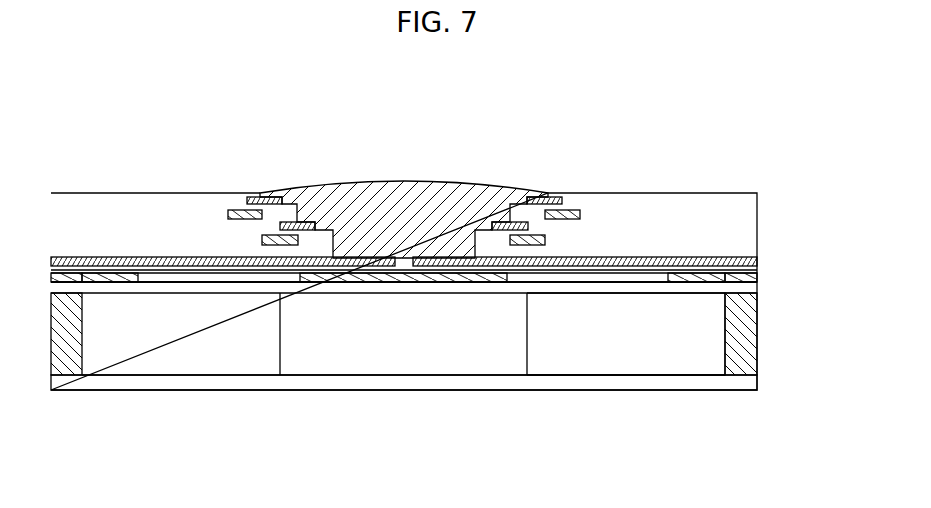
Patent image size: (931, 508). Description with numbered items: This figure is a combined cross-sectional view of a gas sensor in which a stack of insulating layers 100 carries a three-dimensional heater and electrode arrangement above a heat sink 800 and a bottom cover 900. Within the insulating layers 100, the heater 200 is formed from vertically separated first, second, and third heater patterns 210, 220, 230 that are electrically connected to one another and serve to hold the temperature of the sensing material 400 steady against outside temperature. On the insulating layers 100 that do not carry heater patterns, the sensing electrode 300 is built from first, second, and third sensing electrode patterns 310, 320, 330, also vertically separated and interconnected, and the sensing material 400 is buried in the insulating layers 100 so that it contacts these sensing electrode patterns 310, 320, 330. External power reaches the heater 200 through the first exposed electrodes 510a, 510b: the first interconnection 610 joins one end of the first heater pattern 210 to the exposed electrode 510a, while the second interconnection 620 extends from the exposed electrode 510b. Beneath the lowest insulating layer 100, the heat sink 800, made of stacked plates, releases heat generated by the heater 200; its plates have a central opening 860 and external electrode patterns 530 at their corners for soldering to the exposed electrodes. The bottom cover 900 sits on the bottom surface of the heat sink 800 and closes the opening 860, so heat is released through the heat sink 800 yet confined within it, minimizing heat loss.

The insulating layer 100 is at (745, 212).
The heater 200 is at (457, 128).
The first heater pattern 210 is at (486, 262).
The second heater pattern 220 is at (537, 236).
The third heater pattern 230 is at (578, 210).
The sensing electrode 300 is at (207, 128).
The first sensing electrode pattern 310 is at (325, 258).
The second sensing electrode pattern 320 is at (307, 222).
The third sensing electrode pattern 330 is at (255, 196).
The sensing material 400 is at (372, 195).
The first exposed electrode 510a is at (745, 275).
The first exposed electrode 510b is at (67, 275).
The external electrode pattern 530 is at (745, 357).
The first interconnection 610 is at (688, 275).
The second interconnection 620 is at (126, 275).
The heat sink 800 is at (602, 353).
The opening 860 is at (475, 355).
The bottom cover 900 is at (375, 382).